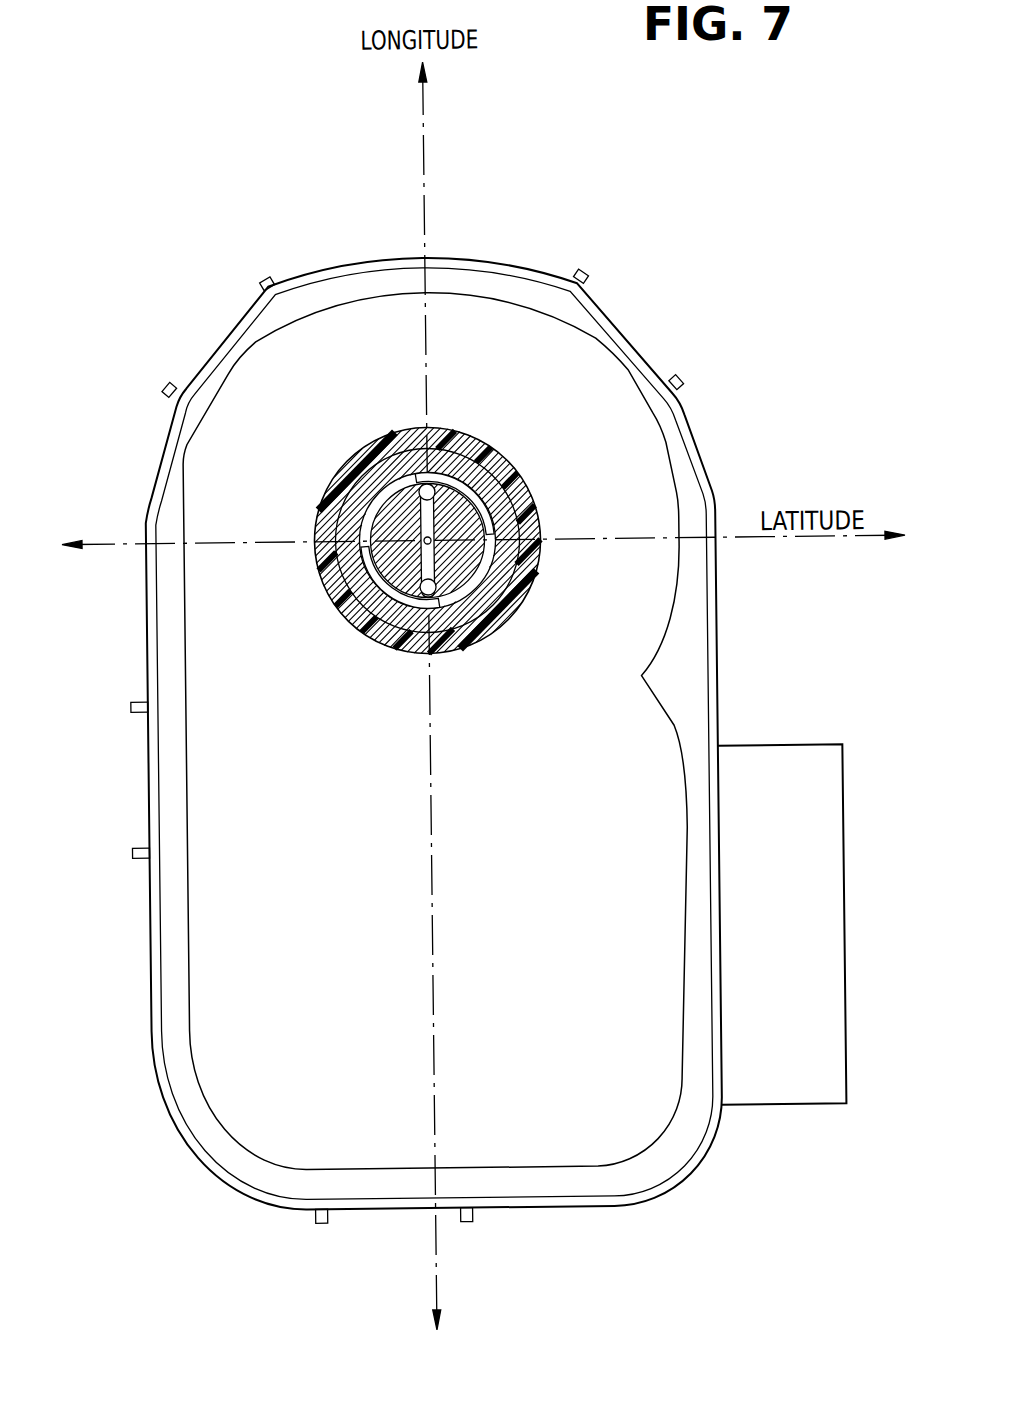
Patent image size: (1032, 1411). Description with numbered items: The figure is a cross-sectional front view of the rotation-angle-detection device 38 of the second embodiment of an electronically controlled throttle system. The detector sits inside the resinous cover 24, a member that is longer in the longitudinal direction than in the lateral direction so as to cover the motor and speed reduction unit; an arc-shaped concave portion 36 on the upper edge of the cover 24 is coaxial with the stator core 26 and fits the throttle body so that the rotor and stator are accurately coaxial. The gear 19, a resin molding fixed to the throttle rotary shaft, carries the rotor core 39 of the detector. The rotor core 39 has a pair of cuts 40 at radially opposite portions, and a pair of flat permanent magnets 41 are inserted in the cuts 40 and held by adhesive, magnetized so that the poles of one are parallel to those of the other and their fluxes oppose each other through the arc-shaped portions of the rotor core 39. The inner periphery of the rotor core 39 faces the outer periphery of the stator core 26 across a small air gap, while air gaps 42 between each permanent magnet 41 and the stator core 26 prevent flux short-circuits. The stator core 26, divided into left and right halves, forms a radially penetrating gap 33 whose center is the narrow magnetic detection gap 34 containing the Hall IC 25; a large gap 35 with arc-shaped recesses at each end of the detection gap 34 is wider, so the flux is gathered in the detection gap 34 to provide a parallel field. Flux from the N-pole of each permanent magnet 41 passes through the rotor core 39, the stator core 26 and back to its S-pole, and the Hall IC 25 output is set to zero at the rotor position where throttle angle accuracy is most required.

The resinous cover 24 is at (629, 342).
The arc-shaped concave portion 36 is at (645, 389).
The gear 19 is at (458, 428).
The rotation-angle-detection device 38 is at (431, 543).
The rotor core 39 is at (379, 446).
The magnetic detection gap 34 is at (516, 581).
The large gap 35 is at (504, 457).
The cuts 40 is at (538, 493).
The permanent magnets 41 is at (536, 499).
The air gaps 42 is at (520, 544).
The gap 33 is at (449, 635).
The Hall IC 25 is at (340, 522).
The stator core 26 is at (371, 597).